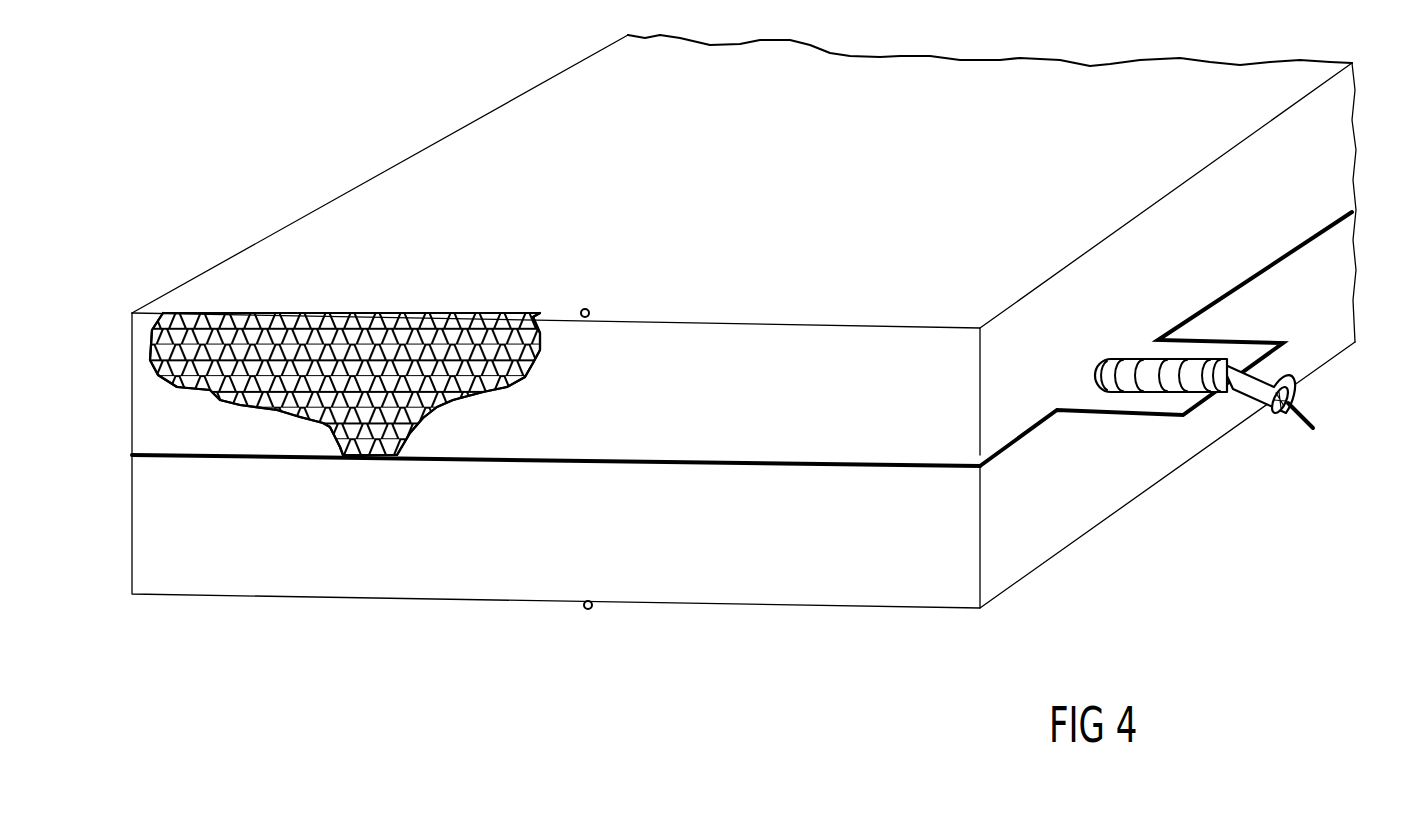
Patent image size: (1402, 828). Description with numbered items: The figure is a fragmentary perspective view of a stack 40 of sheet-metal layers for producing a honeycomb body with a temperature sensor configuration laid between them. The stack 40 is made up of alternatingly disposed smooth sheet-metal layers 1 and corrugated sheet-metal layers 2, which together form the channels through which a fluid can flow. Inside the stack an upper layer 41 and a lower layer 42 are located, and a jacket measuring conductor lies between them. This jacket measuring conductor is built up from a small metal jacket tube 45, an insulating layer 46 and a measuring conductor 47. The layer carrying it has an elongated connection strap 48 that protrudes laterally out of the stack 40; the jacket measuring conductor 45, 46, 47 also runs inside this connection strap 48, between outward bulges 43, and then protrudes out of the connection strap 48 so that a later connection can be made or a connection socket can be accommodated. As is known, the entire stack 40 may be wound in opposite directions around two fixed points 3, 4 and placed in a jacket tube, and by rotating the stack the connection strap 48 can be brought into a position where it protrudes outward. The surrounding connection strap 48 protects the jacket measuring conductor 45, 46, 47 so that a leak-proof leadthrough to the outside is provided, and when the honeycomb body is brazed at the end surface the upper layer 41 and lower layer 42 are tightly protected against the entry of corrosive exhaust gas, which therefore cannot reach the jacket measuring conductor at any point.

The stack of sheet-metal layers 40 is at (345, 195).
The smooth sheet-metal layer 1 is at (317, 313).
The corrugated sheet-metal layer 2 is at (384, 313).
The fixed point 3 is at (590, 308).
The fixed point 4 is at (590, 609).
The upper layer 41 is at (672, 459).
The lower layer 42 is at (692, 467).
The outward bulge 43 is at (1198, 360).
The small metal jacket tube 45 is at (1247, 391).
The insulating layer 46 is at (1273, 407).
The measuring conductor 47 is at (1300, 412).
The connection strap 48 is at (1090, 417).